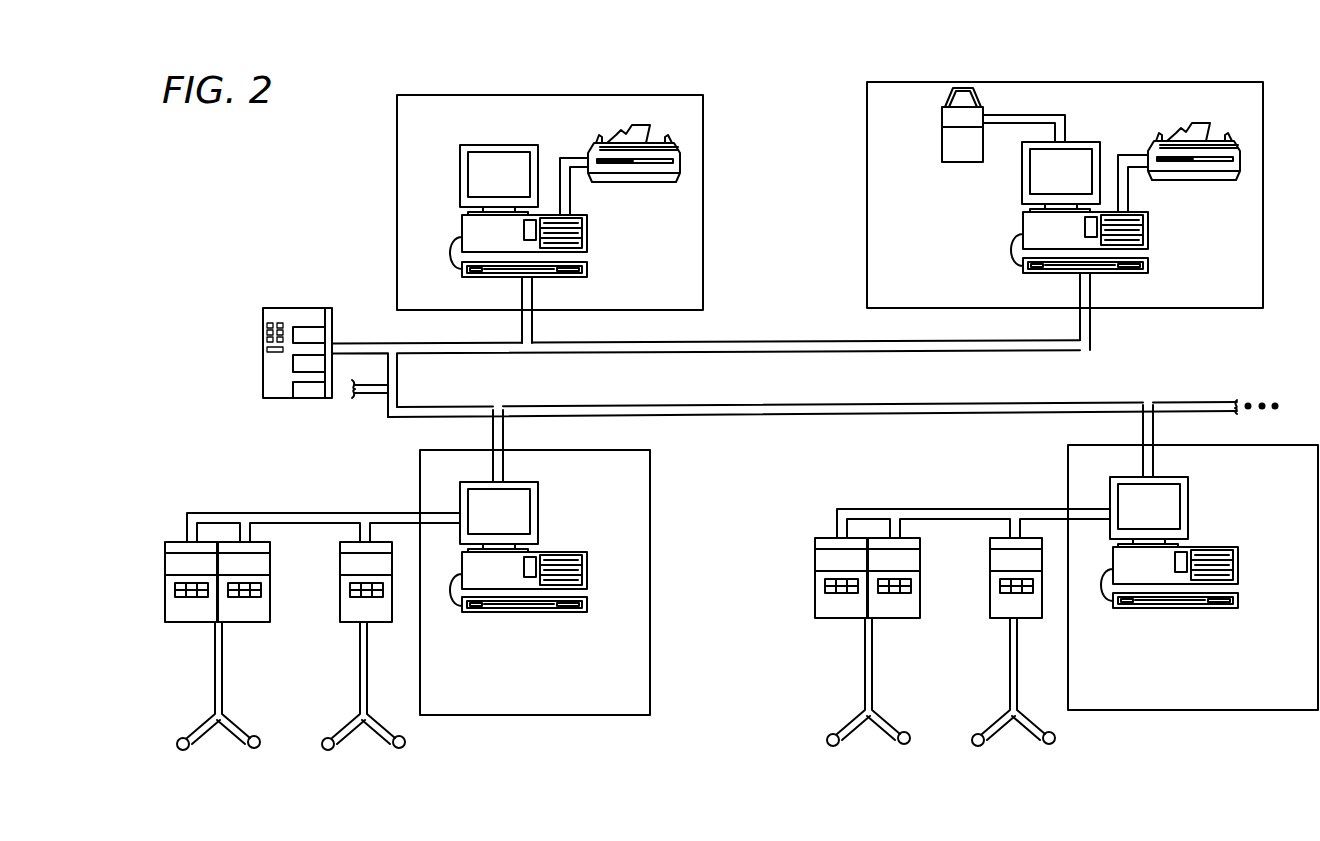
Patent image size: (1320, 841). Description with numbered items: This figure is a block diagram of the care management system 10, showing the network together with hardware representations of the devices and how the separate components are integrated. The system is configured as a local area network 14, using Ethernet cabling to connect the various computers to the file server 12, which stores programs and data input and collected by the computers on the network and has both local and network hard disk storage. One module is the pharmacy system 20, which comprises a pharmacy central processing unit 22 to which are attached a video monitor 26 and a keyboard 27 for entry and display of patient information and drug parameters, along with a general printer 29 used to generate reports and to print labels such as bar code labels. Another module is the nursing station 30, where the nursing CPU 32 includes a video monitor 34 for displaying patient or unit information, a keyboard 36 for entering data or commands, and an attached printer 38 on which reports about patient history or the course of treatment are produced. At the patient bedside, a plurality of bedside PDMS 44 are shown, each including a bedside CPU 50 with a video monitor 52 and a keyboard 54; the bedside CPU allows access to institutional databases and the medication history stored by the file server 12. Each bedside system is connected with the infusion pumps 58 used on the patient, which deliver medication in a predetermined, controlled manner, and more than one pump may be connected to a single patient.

The care management system 10 is at (1150, 368).
The file server 12 is at (262, 383).
The local area network 14 is at (628, 352).
The pharmacy system 20 is at (1068, 82).
The pharmacy central processing unit 22 is at (1148, 230).
The video monitor 26 is at (1022, 173).
The keyboard 27 is at (1147, 262).
The general printer 29 is at (1193, 180).
The nursing station 30 is at (553, 95).
The nursing CPU 32 is at (587, 228).
The video monitor 34 is at (460, 177).
The keyboard 36 is at (587, 265).
The printer 38 is at (633, 182).
The bedside PDMS 44 is at (618, 450).
The bedside CPU 50 is at (588, 568).
The video monitor 52 is at (538, 513).
The keyboard 54 is at (525, 613).
The infusion pump 58 is at (192, 623).